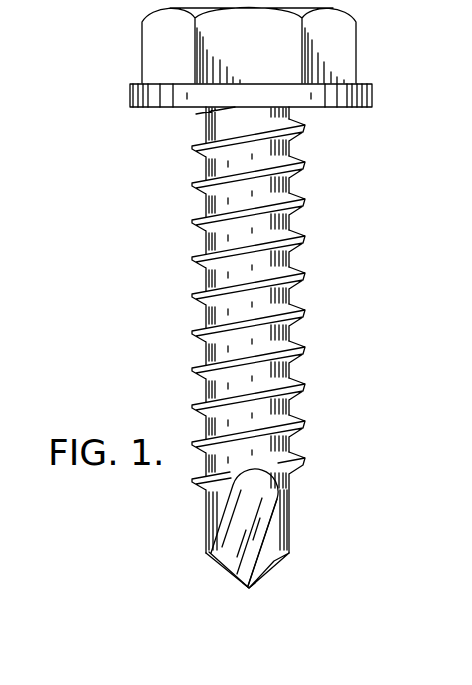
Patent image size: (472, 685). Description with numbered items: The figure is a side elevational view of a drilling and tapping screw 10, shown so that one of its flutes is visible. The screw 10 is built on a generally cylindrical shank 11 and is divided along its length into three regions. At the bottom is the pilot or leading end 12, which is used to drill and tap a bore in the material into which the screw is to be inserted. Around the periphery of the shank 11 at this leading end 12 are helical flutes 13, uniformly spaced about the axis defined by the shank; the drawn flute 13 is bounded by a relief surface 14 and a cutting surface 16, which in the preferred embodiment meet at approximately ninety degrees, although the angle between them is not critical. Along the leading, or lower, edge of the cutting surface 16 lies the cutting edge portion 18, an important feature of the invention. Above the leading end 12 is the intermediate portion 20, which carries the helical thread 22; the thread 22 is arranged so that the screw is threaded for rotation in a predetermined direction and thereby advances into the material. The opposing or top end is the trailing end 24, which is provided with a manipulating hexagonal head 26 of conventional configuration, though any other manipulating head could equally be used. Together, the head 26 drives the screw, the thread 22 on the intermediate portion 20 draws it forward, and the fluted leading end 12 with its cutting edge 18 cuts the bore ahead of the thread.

The drilling and tapping screw 10 is at (175, 313).
The shank 11 is at (302, 280).
The pilot or leading end 12 is at (318, 485).
The helical flute 13 is at (243, 530).
The relief surface 14 is at (232, 484).
The cutting surface 16 is at (268, 507).
The cutting edge portion 18 is at (250, 588).
The intermediate portion 20 is at (322, 325).
The thread 22 is at (303, 201).
The trailing end 24 is at (185, 128).
The hexagonal head 26 is at (343, 35).